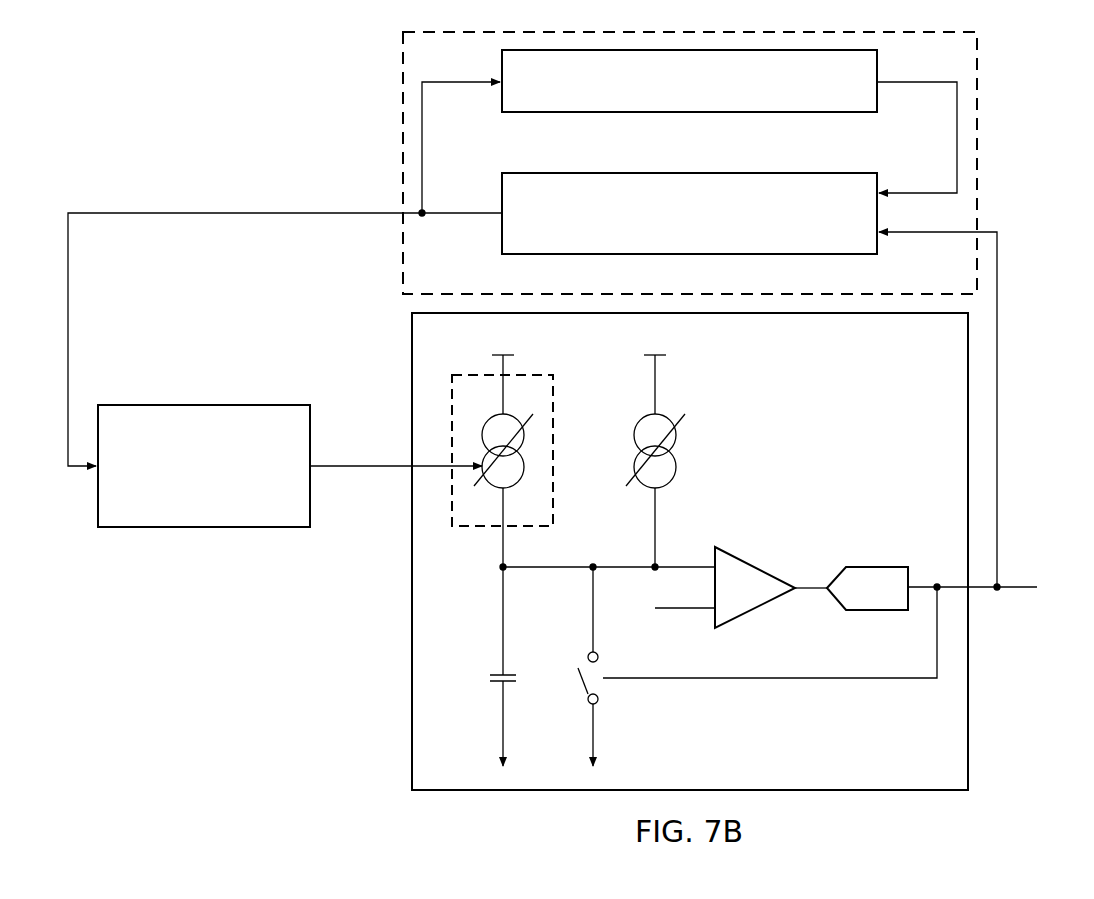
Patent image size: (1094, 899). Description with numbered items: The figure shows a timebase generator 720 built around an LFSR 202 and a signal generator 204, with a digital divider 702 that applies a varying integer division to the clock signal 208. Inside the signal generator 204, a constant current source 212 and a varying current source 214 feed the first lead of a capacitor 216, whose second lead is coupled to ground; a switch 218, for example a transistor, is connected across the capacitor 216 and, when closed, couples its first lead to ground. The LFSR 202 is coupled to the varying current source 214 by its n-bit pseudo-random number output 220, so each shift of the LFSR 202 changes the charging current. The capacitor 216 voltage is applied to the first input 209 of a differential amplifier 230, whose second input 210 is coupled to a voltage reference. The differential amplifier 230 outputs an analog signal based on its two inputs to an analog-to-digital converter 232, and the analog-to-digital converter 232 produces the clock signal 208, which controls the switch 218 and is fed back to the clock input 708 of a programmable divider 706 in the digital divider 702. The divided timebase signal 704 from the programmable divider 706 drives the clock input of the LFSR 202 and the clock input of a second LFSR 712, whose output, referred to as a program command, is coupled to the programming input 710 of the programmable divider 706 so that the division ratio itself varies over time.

The timebase generator 720 is at (220, 92).
The digital divider 702 is at (979, 113).
The divided timebase signal 704 is at (257, 212).
The programmable divider 706 is at (710, 173).
The clock input 708 is at (930, 233).
The programming input 710 is at (905, 193).
The LFSR 712 is at (665, 113).
The LFSR 202 is at (205, 405).
The signal generator 204 is at (807, 434).
The clock signal 208 is at (1017, 592).
The first input 209 is at (685, 567).
The second input 210 is at (685, 612).
The constant current source 212 is at (660, 415).
The varying current source 214 is at (480, 375).
The capacitor 216 is at (490, 679).
The switch 218 is at (580, 688).
The n-bit pseudo-random number output 220 is at (360, 468).
The differential amplifier 230 is at (760, 562).
The analog-to-digital converter 232 is at (876, 567).